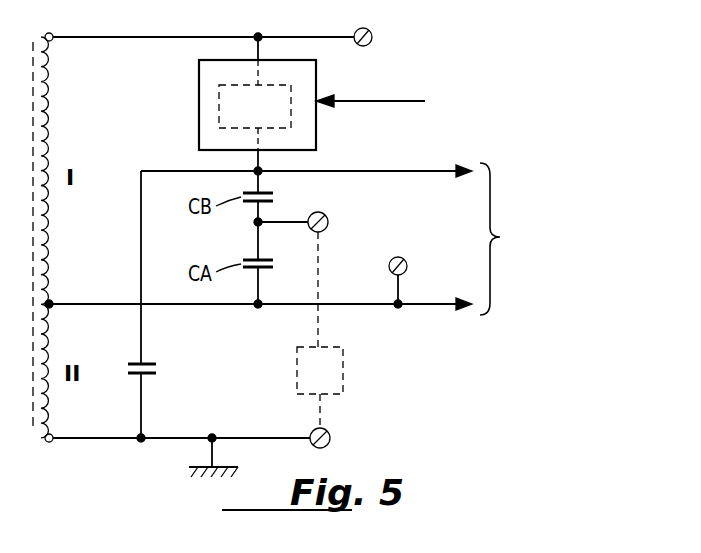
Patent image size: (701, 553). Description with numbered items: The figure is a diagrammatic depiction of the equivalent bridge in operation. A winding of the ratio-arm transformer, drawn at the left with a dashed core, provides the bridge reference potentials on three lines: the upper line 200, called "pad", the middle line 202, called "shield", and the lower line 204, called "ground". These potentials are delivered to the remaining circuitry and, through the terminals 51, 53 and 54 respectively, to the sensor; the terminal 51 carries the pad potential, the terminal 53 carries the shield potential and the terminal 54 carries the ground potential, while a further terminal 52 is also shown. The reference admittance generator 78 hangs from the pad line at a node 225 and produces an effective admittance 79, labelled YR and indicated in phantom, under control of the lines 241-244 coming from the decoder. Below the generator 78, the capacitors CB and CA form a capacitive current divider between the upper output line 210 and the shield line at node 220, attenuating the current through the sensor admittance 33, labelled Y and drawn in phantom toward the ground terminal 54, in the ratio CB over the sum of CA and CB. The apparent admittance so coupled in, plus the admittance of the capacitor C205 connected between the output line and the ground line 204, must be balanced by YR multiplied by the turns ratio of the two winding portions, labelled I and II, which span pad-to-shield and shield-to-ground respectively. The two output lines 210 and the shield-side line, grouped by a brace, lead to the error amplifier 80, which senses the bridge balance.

The pad line 200 is at (191, 37).
The junction node 225 is at (258, 36).
The pad terminal 51 is at (372, 36).
The reference admittance generator 78 is at (317, 80).
The effective admittance 79 is at (218, 105).
The control lines 241-244 is at (365, 101).
The output line to error amplifier 210 is at (435, 174).
The PR terminal 52 is at (314, 213).
The shield terminal 53 is at (398, 256).
The shield line 202 is at (88, 304).
The junction node 220 is at (258, 305).
The error amplifier 80 is at (522, 239).
The capacitor C205 is at (158, 369).
The sensor admittance 33 is at (343, 378).
The ground line 204 is at (98, 440).
The ground terminal 54 is at (328, 432).